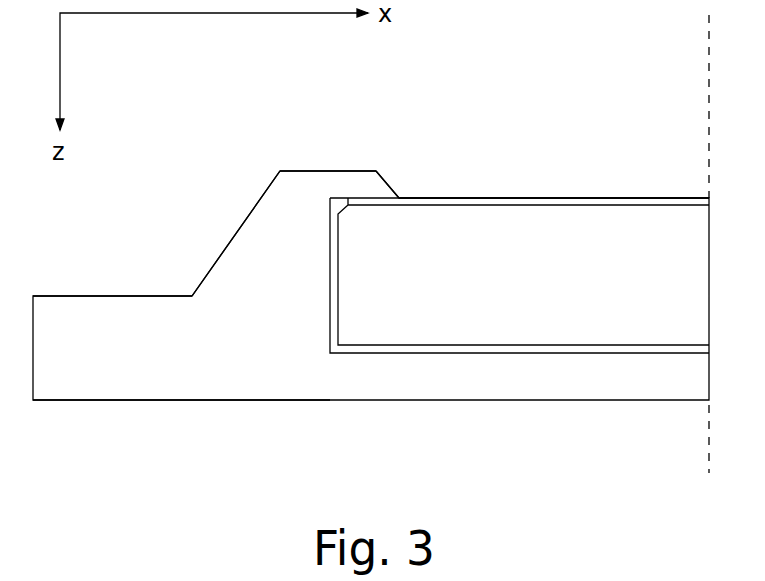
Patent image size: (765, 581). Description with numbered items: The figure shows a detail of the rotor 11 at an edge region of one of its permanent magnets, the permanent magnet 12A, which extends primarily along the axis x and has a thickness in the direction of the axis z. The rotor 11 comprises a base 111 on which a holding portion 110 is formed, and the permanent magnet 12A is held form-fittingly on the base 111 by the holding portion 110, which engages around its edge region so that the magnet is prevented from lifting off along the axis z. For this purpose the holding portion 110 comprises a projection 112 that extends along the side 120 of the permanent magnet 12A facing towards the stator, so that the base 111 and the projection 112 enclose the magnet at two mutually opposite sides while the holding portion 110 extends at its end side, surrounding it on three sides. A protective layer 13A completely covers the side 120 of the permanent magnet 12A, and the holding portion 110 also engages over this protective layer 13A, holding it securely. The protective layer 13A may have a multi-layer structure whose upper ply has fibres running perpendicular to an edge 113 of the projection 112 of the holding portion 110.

The rotor 11 is at (192, 220).
The holding portion 110 is at (228, 268).
The base 111 is at (113, 341).
The projection 112 is at (357, 187).
The edge 113 is at (400, 197).
The protective layer 13A is at (522, 198).
The permanent magnet 12A is at (510, 323).
The side facing towards the stator 120 is at (625, 188).